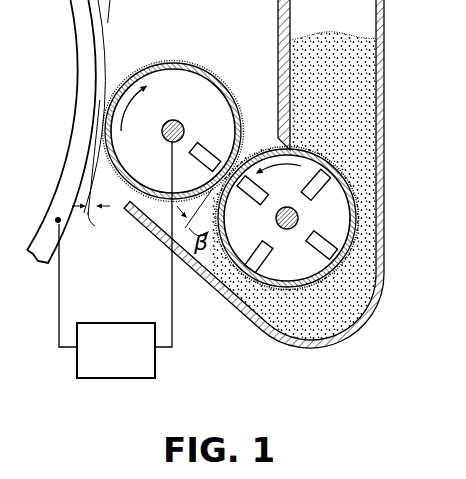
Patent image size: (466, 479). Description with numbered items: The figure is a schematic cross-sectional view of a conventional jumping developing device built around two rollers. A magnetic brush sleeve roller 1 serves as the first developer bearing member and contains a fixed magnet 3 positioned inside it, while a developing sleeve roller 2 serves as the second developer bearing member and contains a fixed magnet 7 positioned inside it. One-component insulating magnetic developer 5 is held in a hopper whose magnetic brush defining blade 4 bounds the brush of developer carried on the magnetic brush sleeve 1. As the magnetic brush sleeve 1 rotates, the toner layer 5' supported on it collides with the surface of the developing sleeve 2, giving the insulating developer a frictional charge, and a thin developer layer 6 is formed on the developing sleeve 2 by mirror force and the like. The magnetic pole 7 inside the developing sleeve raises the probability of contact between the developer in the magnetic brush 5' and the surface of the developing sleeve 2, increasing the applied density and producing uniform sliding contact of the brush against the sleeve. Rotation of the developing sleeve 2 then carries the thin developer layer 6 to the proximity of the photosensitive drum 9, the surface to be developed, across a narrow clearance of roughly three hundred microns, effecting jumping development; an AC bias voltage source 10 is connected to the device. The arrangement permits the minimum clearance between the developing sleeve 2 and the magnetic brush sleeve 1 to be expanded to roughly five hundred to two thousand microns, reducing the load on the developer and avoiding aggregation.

The magnetic brush sleeve roller 1 is at (222, 255).
The developing sleeve roller 2 is at (173, 111).
The fixed magnet 3 is at (303, 186).
The magnetic brush defining blade 4 is at (279, 80).
The one-component insulating magnetic developer 5 is at (310, 186).
The toner layer 5' is at (287, 196).
The thin developer layer 6 is at (206, 68).
The fixed magnet 7 is at (212, 141).
The photosensitive drum 9 is at (104, 45).
The AC bias voltage source 10 is at (115, 378).